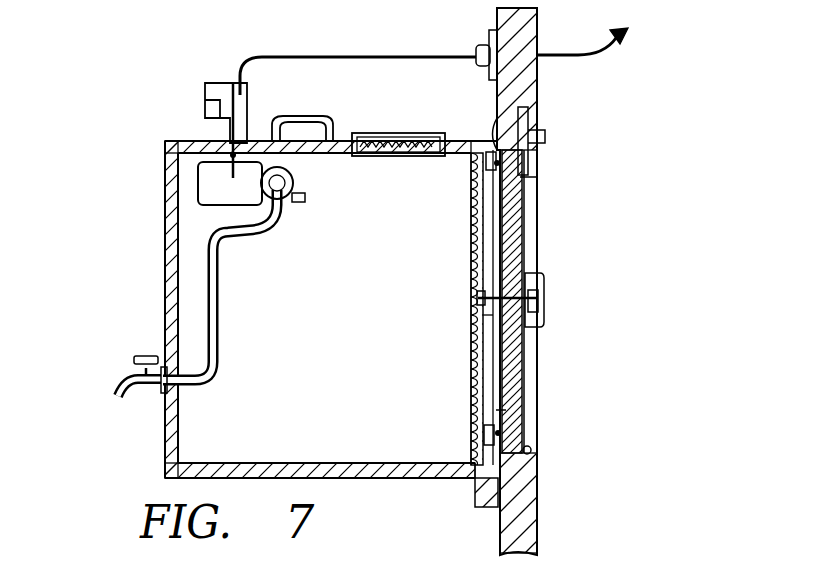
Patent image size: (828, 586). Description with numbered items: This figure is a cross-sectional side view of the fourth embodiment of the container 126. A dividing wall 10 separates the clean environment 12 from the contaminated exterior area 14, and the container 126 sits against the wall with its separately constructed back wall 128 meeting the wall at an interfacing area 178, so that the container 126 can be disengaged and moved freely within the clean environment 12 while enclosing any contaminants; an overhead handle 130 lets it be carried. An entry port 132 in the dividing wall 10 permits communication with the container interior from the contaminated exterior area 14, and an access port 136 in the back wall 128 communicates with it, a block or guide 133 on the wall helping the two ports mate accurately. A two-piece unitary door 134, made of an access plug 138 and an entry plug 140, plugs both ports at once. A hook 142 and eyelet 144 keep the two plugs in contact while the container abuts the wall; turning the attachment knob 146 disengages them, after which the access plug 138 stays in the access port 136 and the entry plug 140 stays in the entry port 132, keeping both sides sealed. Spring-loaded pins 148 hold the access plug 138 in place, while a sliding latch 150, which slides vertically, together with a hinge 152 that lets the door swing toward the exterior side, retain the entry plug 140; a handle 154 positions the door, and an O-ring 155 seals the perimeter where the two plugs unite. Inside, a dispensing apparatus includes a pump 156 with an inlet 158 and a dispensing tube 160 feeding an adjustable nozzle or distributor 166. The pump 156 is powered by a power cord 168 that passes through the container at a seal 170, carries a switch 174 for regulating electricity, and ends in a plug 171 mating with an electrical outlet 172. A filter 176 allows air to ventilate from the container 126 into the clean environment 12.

The dividing wall 10 is at (540, 80).
The clean environment 12 is at (89, 78).
The contaminated exterior area 14 is at (712, 69).
The container 126 is at (143, 265).
The back wall 128 is at (473, 480).
The overhead handle 130 is at (306, 116).
The entry port 132 is at (556, 237).
The block or guide 133 is at (475, 508).
The two-piece unitary door 134 is at (537, 362).
The access port 136 is at (449, 307).
The access plug 138 is at (470, 210).
The entry plug 140 is at (518, 400).
The hook 142 is at (478, 290).
The eyelet 144 is at (478, 322).
The attachment knob 146 is at (546, 305).
The spring-loaded pins 148 is at (486, 160).
The sliding latch 150 is at (546, 137).
The hinge 152 is at (532, 451).
The handle 154 is at (546, 280).
The O-ring 155 is at (530, 180).
The pump 156 is at (200, 192).
The inlet 158 is at (300, 203).
The dispensing tube 160 is at (220, 310).
The adjustable nozzle or distributor 166 is at (124, 384).
The power cord 168 is at (275, 54).
The seal 170 is at (206, 134).
The plug 171 is at (478, 47).
The electrical outlet 172 is at (490, 67).
The switch 174 is at (205, 103).
The filter 176 is at (384, 133).
The interfacing area 178 is at (493, 126).